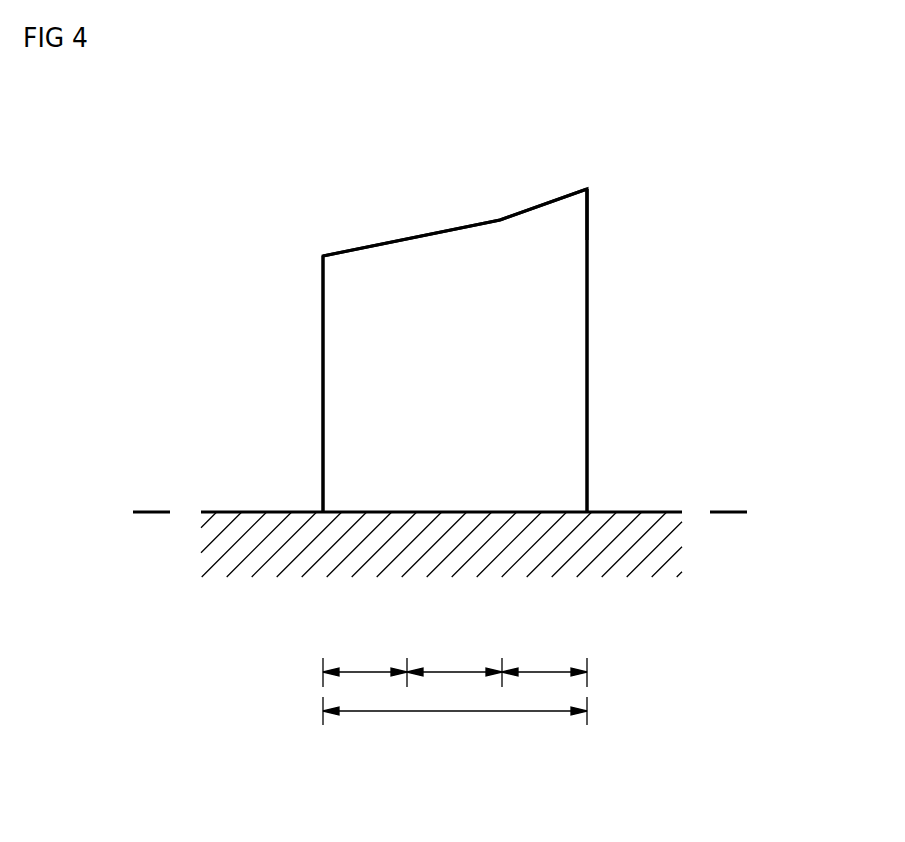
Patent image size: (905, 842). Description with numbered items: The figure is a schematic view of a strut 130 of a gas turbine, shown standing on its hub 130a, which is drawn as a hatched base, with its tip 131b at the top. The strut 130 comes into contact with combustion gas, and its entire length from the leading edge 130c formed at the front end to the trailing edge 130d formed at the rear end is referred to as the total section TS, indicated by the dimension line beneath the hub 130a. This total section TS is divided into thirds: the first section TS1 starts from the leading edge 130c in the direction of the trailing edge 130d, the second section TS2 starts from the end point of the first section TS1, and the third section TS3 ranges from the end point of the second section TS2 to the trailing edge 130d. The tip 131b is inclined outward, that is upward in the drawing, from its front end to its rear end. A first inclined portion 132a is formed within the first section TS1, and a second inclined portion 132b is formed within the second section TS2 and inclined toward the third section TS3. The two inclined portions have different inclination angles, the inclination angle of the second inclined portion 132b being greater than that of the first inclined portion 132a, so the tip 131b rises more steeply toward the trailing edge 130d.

The strut 130 is at (352, 242).
The hub 130a is at (558, 512).
The leading edge 130c is at (323, 383).
The trailing edge 130d is at (589, 457).
The tip 131b is at (589, 215).
The first inclined portion 132a is at (393, 237).
The second inclined portion 132b is at (543, 204).
The first section TS1 is at (365, 657).
The second section TS2 is at (454, 657).
The third section TS3 is at (544, 657).
The total section TS is at (455, 725).